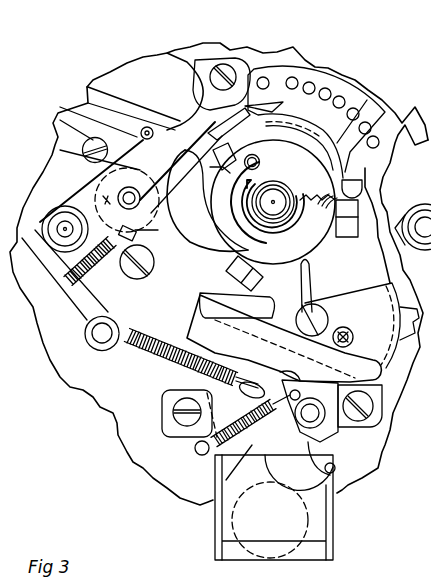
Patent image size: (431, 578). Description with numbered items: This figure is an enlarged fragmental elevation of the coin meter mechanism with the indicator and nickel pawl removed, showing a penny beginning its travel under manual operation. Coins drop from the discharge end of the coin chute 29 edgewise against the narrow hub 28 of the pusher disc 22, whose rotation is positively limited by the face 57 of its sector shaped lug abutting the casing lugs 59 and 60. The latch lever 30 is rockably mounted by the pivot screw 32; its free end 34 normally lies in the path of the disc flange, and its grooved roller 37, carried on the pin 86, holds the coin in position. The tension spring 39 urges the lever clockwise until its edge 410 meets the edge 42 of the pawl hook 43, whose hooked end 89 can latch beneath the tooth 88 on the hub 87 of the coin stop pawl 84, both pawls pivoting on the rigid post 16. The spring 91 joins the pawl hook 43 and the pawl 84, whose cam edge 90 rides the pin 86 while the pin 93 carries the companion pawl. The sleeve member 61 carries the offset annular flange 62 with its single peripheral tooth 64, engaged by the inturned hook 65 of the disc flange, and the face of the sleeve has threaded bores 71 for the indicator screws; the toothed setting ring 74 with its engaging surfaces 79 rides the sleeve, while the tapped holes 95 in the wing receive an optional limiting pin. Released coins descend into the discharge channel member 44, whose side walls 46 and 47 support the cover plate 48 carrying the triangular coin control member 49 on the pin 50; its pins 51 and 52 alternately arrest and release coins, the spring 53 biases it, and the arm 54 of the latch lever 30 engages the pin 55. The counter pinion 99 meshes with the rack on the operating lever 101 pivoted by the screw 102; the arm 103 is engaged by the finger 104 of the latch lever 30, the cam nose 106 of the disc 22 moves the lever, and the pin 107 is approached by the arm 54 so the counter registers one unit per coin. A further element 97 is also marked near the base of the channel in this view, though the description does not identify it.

The coin chute 29 is at (191, 68).
The toothed setting ring 74 is at (245, 122).
The engaging surfaces 79 is at (272, 100).
The sleeve member 61 is at (292, 143).
The face of sector shaped lug 57 is at (362, 98).
The peripheral tooth 64 is at (338, 138).
The offset annular flange 62 is at (372, 153).
The pin 93 is at (140, 133).
The free end of latch lever 34 is at (183, 140).
The roller 37 is at (88, 179).
The coin stop pawl 84 is at (90, 193).
The hub 87 is at (45, 216).
The tooth 88 is at (42, 236).
The pin 86 is at (131, 190).
The threaded bores 71 is at (259, 163).
The inturned hook 65 is at (352, 182).
The hooked end of pawl hook 89 is at (30, 256).
The rigid post 16 is at (26, 268).
The pawl hook 43 is at (58, 300).
The spring 91 is at (62, 342).
The cam edge 90 is at (148, 228).
The latch lever 30 is at (175, 263).
The lug 60 is at (228, 267).
The pivot screw 32 is at (150, 263).
The finger 104 is at (222, 281).
The cam nose 106 is at (258, 322).
The arm 103 is at (292, 286).
The hub 28 is at (317, 230).
The lug 59 is at (344, 222).
The pusher disc 22 is at (300, 235).
The screw 102 is at (312, 310).
The operating lever 101 is at (372, 294).
The pin 107 is at (353, 337).
The counter pinion 99 is at (380, 345).
The arm 54 is at (378, 362).
The edge of latch lever 410 is at (125, 312).
The edge of pawl hook 42 is at (115, 326).
The tension spring 39 is at (148, 362).
The pin 51 is at (290, 378).
The spring 53 is at (250, 421).
The pin 50 is at (310, 412).
The pin 55 is at (318, 428).
The coin control member 49 is at (340, 448).
The pin 52 is at (336, 468).
The side wall 47 is at (335, 505).
The side wall 46 is at (213, 465).
The discharge channel member 44 is at (213, 478).
The cover plate 48 is at (213, 502).
The tapped holes 95 is at (350, 577).
The base plate 97 is at (311, 570).